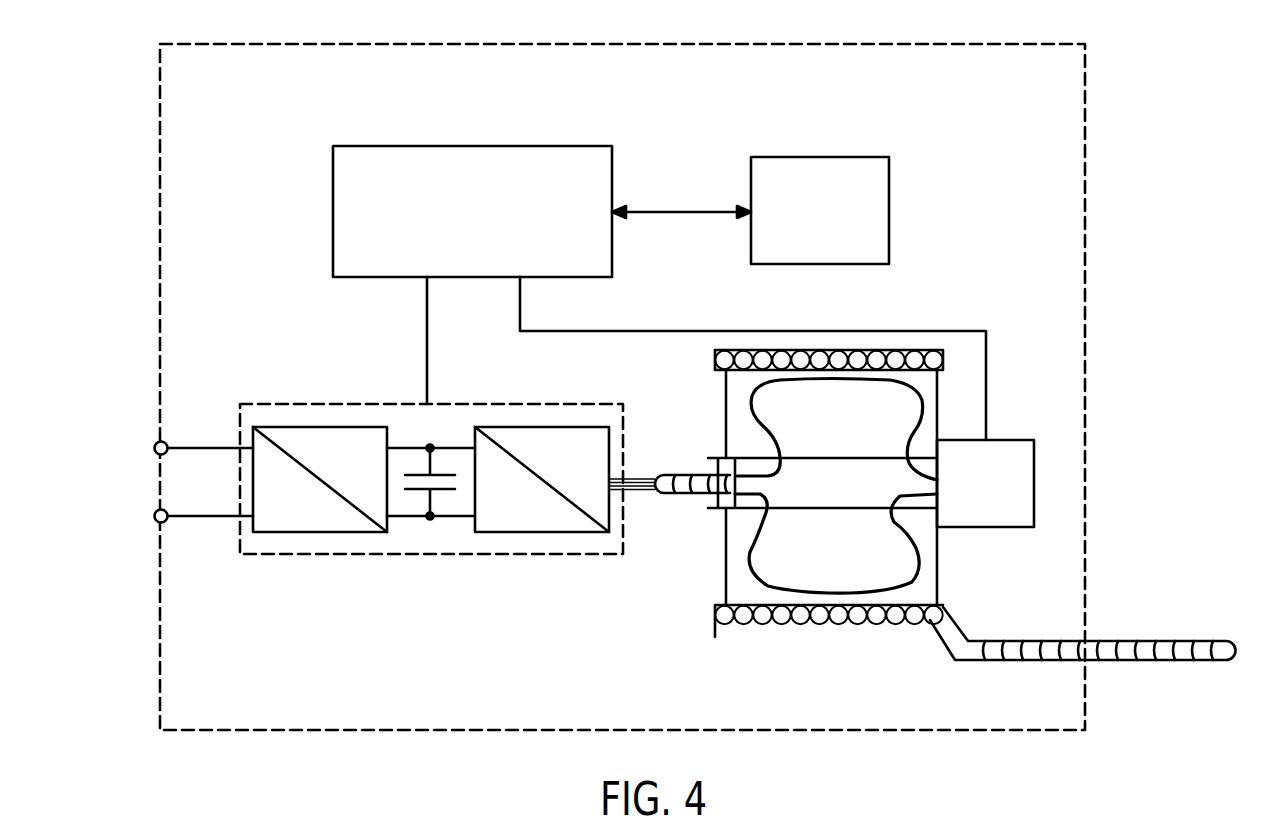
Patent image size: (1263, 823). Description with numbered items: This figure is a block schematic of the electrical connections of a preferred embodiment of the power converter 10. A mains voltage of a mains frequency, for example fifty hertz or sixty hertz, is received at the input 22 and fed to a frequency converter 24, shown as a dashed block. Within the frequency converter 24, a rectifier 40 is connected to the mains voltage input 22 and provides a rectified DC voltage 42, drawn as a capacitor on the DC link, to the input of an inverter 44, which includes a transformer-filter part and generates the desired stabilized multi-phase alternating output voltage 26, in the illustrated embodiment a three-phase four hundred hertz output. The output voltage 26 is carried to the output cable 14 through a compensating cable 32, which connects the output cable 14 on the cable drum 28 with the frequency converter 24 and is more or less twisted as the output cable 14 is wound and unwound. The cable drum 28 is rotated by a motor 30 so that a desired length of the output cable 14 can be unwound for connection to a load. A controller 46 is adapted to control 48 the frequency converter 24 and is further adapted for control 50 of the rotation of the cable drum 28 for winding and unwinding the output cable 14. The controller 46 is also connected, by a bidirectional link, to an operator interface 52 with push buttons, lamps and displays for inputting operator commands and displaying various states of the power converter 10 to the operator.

The power converter 10 is at (622, 43).
The output cable 14 is at (1013, 661).
The input 22 is at (163, 483).
The frequency converter 24 is at (583, 555).
The output voltage 26 is at (632, 479).
The cable drum 28 is at (938, 565).
The motor 30 is at (1017, 450).
The compensating cable 32 is at (745, 551).
The rectifier 40 is at (318, 533).
The rectified DC voltage 42 is at (425, 492).
The inverter 44 is at (538, 533).
The controller 46 is at (470, 146).
The control of the frequency converter 48 is at (427, 333).
The control of the rotation of the cable drum 50 is at (880, 331).
The operator interface 52 is at (889, 212).